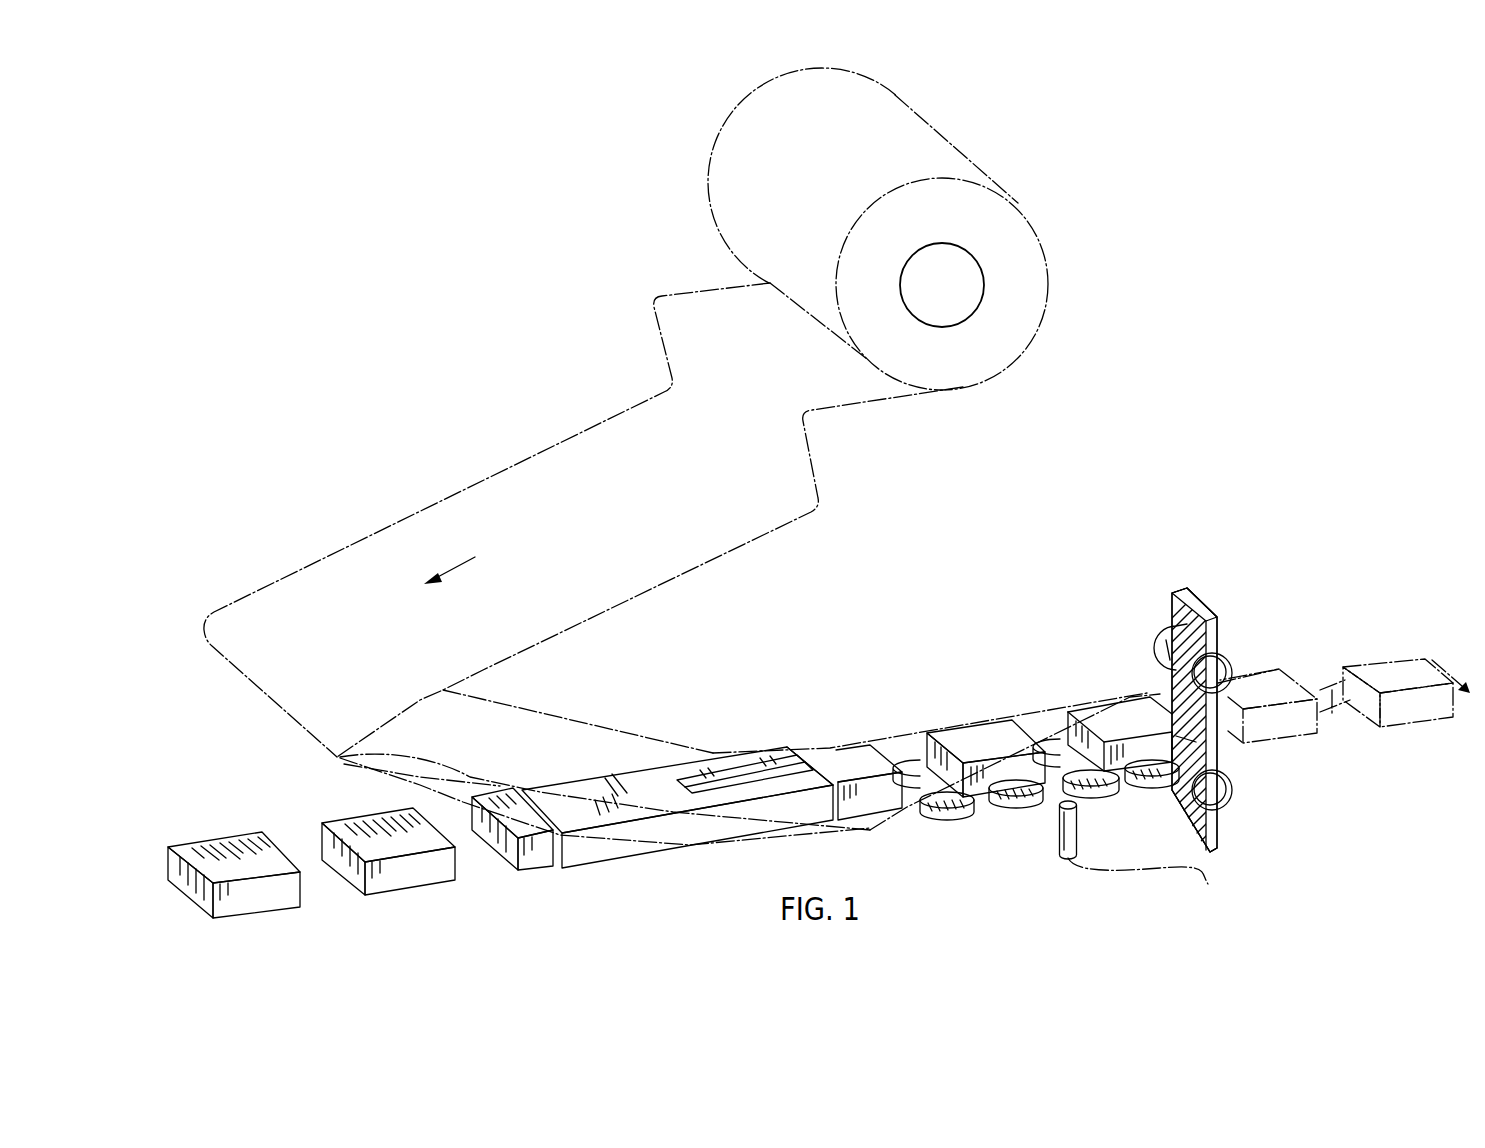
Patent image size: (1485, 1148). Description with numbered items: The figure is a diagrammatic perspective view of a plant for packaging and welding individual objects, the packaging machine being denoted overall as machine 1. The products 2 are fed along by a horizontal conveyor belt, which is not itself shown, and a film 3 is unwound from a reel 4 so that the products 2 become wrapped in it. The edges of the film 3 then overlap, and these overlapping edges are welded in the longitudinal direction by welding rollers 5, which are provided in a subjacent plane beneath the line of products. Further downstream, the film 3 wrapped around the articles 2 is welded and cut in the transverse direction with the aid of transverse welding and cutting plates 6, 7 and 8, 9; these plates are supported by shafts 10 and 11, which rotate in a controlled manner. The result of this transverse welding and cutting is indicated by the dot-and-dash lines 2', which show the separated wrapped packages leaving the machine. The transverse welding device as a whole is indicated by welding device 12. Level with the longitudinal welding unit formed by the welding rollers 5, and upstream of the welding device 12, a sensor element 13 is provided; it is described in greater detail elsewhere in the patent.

The packaging machine 1 is at (1002, 576).
The products 2 is at (670, 786).
The dot-and-dash lines 2' is at (1336, 645).
The film 3 is at (720, 513).
The reel 4 is at (940, 360).
The welding rollers 5 is at (965, 820).
The transverse welding and cutting plate 6 is at (1217, 632).
The transverse welding and cutting plate 7 is at (1230, 683).
The transverse welding and cutting plate 8 is at (1190, 738).
The transverse welding and cutting plate 9 is at (1213, 828).
The shaft 10 is at (1182, 652).
The shaft 11 is at (1208, 790).
The welding device 12 is at (1182, 550).
The sensor element 13 is at (1060, 824).